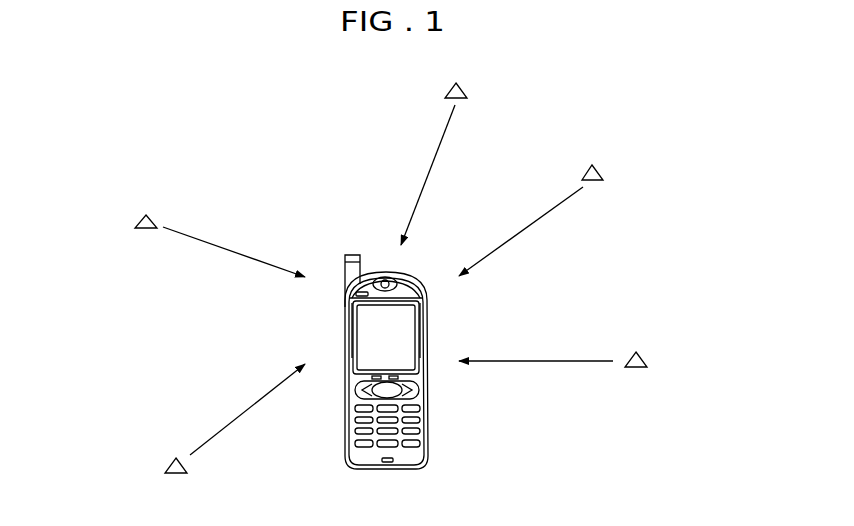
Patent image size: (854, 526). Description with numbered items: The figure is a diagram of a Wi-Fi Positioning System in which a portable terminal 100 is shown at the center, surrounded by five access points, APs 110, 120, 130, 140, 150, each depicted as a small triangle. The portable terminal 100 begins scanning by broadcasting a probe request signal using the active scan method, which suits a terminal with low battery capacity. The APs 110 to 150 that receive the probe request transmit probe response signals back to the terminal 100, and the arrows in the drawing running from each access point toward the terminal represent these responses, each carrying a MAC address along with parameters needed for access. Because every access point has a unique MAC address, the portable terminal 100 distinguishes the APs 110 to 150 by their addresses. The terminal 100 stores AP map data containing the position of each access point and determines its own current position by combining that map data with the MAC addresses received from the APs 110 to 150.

The portable terminal 100 is at (430, 469).
The access point 110 is at (185, 243).
The access point 120 is at (200, 419).
The access point 130 is at (588, 355).
The access point 140 is at (566, 219).
The access point 150 is at (462, 162).